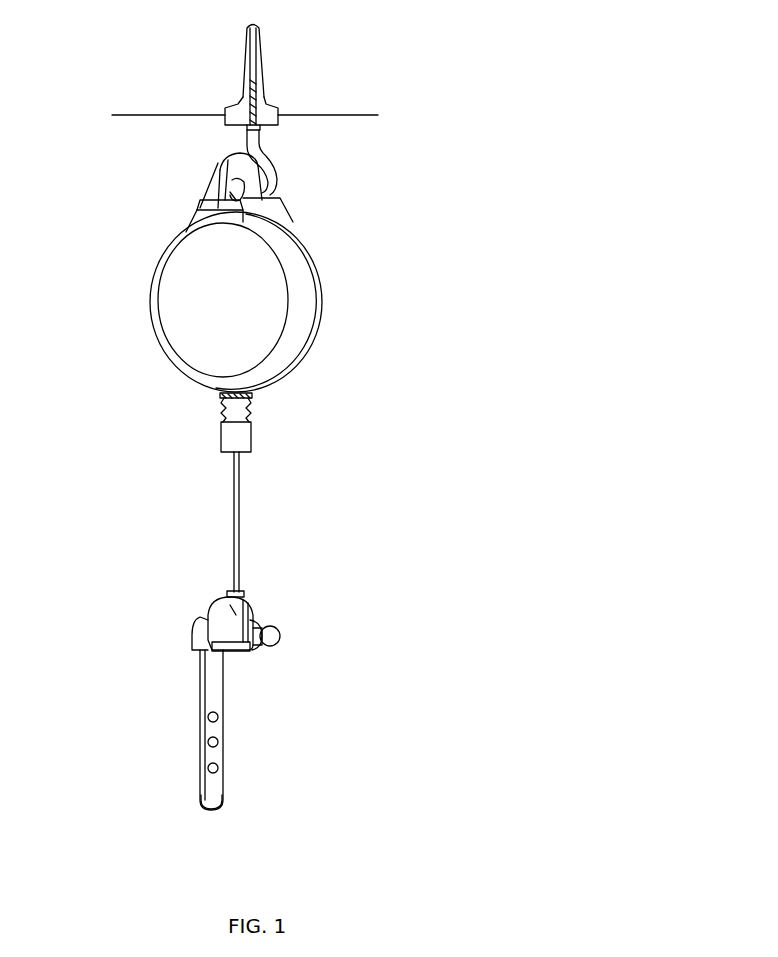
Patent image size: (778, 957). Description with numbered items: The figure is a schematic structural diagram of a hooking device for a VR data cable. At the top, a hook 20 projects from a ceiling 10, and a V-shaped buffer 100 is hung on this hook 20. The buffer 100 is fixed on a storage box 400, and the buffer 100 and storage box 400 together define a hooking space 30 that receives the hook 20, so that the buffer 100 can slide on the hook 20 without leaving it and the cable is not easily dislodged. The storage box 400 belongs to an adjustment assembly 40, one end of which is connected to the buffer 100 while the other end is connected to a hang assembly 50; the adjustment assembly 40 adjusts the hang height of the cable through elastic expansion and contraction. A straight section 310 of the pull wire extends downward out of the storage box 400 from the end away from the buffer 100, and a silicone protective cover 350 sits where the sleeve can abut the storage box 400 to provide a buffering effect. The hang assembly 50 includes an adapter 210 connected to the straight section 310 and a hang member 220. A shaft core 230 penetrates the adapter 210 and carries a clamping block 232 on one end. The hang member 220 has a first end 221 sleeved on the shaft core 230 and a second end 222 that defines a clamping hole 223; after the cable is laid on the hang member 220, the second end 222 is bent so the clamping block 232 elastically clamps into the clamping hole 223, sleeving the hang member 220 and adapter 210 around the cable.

The ceiling 10 is at (347, 114).
The hook 20 is at (270, 162).
The hooking space 30 is at (220, 182).
The buffer 100 is at (200, 202).
The adjustment assembly 40 is at (260, 310).
The storage box 400 is at (185, 275).
The protective cover 350 is at (233, 434).
The straight section 310 is at (233, 497).
The hang assembly 50 is at (243, 596).
The adapter 210 is at (232, 612).
The clamping block 232 is at (272, 637).
The shaft core 230 is at (258, 650).
The first end 221 is at (207, 663).
The hang member 220 is at (205, 699).
The clamping hole 223 is at (208, 747).
The second end 222 is at (206, 801).